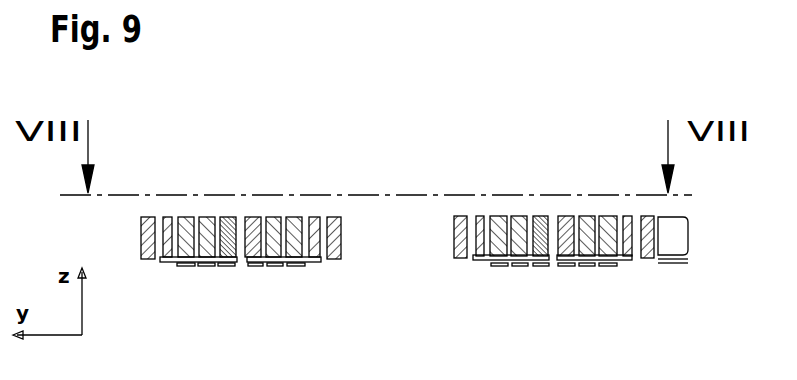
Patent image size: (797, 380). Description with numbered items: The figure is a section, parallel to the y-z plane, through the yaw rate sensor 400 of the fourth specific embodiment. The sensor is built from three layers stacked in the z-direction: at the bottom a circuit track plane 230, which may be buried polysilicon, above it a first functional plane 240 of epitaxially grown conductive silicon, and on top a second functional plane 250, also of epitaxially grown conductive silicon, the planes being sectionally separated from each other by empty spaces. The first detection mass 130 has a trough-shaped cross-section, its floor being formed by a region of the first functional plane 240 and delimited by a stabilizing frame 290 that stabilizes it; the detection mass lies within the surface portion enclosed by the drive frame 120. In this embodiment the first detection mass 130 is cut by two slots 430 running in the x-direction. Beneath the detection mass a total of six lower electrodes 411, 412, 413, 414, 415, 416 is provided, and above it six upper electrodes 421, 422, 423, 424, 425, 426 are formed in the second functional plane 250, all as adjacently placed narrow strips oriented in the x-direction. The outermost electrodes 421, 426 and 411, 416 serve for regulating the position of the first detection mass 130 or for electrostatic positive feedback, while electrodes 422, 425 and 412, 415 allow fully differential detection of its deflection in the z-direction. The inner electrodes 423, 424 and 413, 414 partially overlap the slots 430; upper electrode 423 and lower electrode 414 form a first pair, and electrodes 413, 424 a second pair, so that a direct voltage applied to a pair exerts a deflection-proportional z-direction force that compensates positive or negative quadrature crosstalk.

The yaw rate sensor 400 is at (510, 120).
The upper electrode 421 is at (187, 217).
The upper electrode 422 is at (208, 217).
The upper electrode 423 is at (230, 217).
The upper electrode 424 is at (256, 217).
The upper electrode 425 is at (278, 217).
The upper electrode 426 is at (298, 217).
The stabilizing frame 290 is at (313, 217).
The drive frame 120 is at (341, 240).
The first detection mass 130 is at (161, 262).
The slot 430 is at (240, 257).
The lower electrode 411 is at (188, 266).
The lower electrode 412 is at (207, 266).
The lower electrode 413 is at (228, 266).
The lower electrode 414 is at (253, 266).
The lower electrode 415 is at (279, 266).
The lower electrode 416 is at (300, 266).
The second functional plane 250 is at (688, 236).
The first functional plane 240 is at (688, 259).
The circuit track plane 230 is at (688, 263).